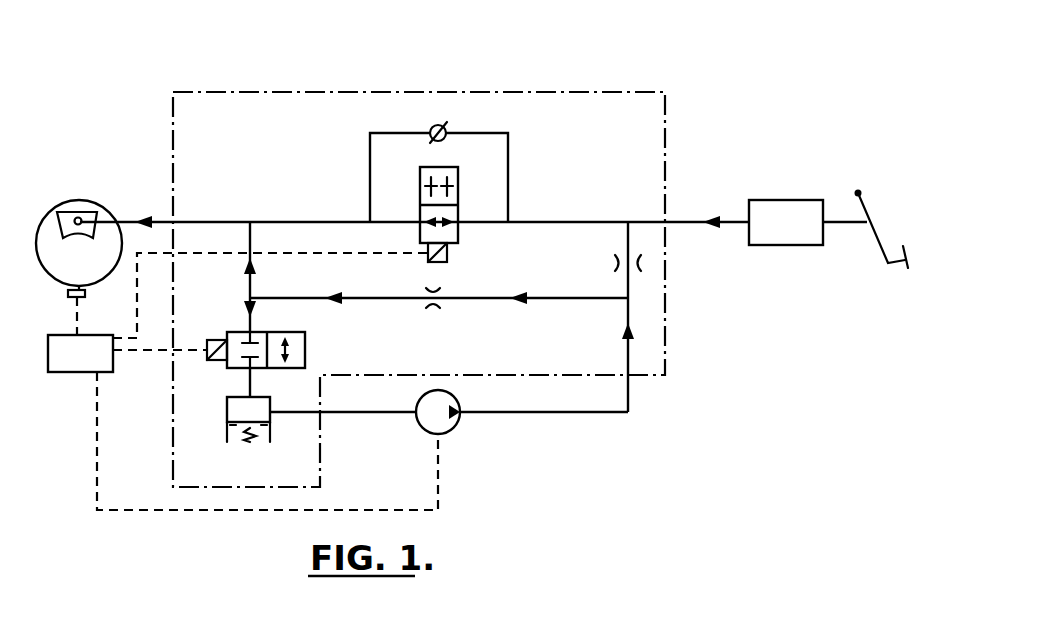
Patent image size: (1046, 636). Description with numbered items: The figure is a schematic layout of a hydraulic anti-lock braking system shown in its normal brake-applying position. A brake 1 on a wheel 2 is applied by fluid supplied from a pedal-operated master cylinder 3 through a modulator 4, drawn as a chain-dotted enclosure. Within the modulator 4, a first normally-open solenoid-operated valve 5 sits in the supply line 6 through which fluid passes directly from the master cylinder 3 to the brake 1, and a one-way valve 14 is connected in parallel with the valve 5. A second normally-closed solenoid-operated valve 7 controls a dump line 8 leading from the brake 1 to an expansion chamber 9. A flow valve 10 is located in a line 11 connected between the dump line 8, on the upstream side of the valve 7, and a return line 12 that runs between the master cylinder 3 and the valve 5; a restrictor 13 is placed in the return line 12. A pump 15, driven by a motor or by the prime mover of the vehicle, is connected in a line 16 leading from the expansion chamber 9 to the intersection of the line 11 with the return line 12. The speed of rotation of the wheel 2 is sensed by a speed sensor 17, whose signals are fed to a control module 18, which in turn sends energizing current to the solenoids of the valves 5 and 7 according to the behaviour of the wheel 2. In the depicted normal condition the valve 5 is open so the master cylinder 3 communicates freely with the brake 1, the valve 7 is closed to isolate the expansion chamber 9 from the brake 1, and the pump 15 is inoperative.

The brake 1 is at (70, 203).
The wheel 2 is at (53, 253).
The pedal-operated master cylinder 3 is at (790, 218).
The modulator 4 is at (665, 375).
The first normally-open solenoid-operated valve 5 is at (455, 232).
The supply line 6 is at (312, 222).
The second normally-closed solenoid-operated valve 7 is at (293, 350).
The dump line 8 is at (253, 287).
The expansion chamber 9 is at (242, 407).
The flow valve 10 is at (433, 310).
The line 11 is at (575, 298).
The return line 12 is at (628, 240).
The restrictor 13 is at (636, 263).
The one-way valve 14 is at (447, 128).
The pump 15 is at (440, 418).
The line 16 is at (575, 412).
The speed sensor 17 is at (85, 293).
The control module 18 is at (77, 355).